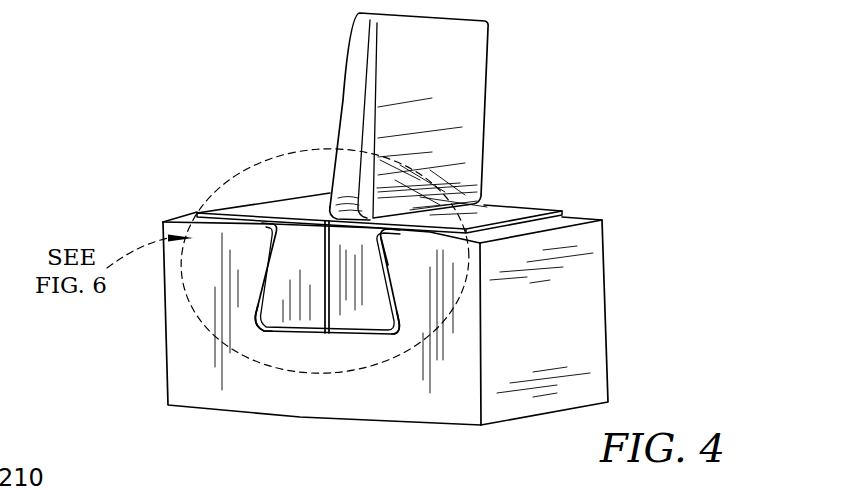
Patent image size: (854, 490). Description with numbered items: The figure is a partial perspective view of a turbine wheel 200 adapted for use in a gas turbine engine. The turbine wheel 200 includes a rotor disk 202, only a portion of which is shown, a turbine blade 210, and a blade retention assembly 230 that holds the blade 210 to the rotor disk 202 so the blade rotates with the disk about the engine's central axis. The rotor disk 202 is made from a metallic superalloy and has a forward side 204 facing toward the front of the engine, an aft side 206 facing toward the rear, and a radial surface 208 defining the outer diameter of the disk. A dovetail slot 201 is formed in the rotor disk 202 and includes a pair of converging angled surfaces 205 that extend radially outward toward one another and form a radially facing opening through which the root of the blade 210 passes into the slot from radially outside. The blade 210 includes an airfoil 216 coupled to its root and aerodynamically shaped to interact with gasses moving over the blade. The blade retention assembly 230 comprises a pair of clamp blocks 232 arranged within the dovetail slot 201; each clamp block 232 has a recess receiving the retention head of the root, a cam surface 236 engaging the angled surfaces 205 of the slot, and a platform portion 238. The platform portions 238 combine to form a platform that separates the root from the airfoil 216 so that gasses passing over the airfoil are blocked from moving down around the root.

The turbine wheel 200 is at (602, 66).
The dovetail slot 201 is at (327, 350).
The rotor disk 202 is at (647, 298).
The forward side 204 is at (468, 404).
The angled surfaces 205 is at (379, 250).
The aft side 206 is at (604, 358).
The radial surface 208 is at (568, 222).
The turbine blade 210 is at (508, 94).
The airfoil 216 is at (323, 103).
The blade retention assembly 230 is at (253, 262).
The clamp blocks 232 is at (268, 306).
The cam surface 236 is at (389, 277).
The platform portion 238 is at (270, 194).